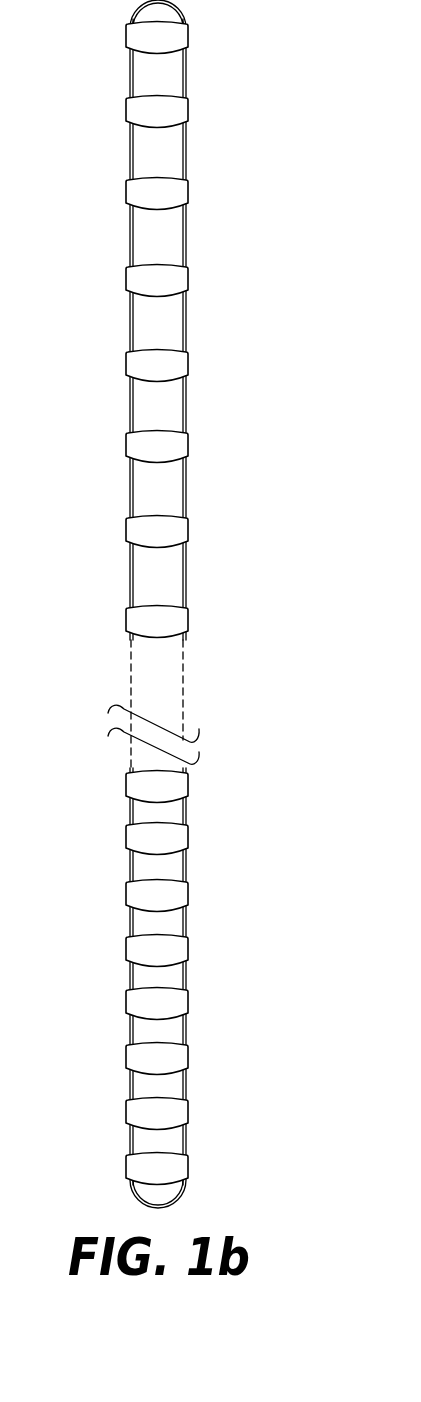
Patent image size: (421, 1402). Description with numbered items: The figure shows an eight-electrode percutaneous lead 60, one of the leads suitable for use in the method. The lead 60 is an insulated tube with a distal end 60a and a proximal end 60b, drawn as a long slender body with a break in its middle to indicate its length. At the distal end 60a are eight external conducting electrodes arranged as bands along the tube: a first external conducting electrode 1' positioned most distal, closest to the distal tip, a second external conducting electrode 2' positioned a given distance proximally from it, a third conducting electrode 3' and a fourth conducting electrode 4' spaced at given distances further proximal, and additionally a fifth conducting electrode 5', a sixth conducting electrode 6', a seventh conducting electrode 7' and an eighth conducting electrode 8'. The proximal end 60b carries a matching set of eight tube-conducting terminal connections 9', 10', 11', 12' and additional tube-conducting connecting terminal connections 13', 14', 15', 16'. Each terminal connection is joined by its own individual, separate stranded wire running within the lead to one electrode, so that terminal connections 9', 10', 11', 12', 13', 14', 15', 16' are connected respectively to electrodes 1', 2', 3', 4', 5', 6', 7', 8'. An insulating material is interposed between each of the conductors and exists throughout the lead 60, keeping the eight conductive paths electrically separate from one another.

The eight-electrode percutaneous lead 60 is at (104, 424).
The distal end 60a is at (111, 139).
The proximal end 60b is at (105, 1024).
The first external conducting electrode 1' is at (191, 38).
The second external conducting electrode 2' is at (191, 112).
The third conducting electrode 3' is at (191, 194).
The fourth conducting electrode 4' is at (191, 281).
The fifth conducting electrode 5' is at (191, 366).
The sixth conducting electrode 6' is at (191, 447).
The seventh conducting electrode 7' is at (191, 532).
The eighth conducting electrode 8' is at (191, 622).
The tube-conducting terminal connection 9' is at (191, 785).
The tube-conducting terminal connection 10' is at (199, 837).
The tube-conducting terminal connection 11' is at (199, 894).
The tube-conducting terminal connection 12' is at (199, 949).
The tube-conducting connecting terminal connection 13' is at (199, 1002).
The tube-conducting connecting terminal connection 14' is at (199, 1057).
The tube-conducting connecting terminal connection 15' is at (199, 1112).
The tube-conducting connecting terminal connection 16' is at (199, 1167).